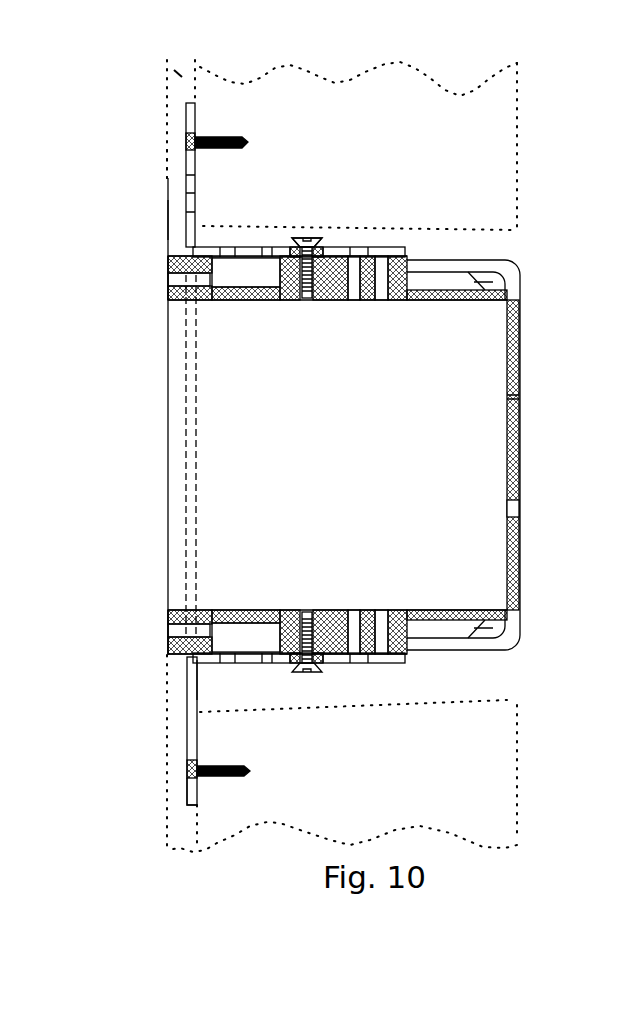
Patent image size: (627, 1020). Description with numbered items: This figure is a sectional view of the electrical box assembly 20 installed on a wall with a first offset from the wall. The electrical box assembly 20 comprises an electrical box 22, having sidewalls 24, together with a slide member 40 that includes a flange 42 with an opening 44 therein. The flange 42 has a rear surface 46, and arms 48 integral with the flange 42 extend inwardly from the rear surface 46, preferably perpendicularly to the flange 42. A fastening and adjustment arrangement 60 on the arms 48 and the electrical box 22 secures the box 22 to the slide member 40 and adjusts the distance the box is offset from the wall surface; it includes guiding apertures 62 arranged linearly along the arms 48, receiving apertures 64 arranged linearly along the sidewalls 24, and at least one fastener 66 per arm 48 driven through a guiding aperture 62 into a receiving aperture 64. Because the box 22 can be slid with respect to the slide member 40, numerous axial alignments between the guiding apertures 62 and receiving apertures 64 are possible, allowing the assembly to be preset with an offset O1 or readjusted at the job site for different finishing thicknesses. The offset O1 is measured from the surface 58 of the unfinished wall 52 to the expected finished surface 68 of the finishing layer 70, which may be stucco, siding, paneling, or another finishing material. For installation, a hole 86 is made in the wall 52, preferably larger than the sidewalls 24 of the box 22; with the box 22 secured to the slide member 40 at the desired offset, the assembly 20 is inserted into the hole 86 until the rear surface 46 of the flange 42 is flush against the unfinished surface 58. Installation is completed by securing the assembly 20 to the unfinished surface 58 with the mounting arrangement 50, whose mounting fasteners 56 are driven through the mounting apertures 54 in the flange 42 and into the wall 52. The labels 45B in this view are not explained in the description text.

The electrical box assembly 20 is at (551, 703).
The electrical box 22 is at (495, 258).
The sidewalls 24 is at (437, 607).
The slide member 40 is at (197, 120).
The flange 42 is at (187, 683).
The opening 44 is at (180, 441).
The fastener slot 45B is at (193, 610).
The rear surface 46 is at (210, 693).
The arms 48 is at (390, 258).
The mounting arrangement 50 is at (172, 771).
The unfinished wall 52 is at (444, 121).
The mounting apertures 54 is at (197, 780).
The mounting fasteners 56 is at (228, 762).
The surface of the unfinished wall 58 is at (183, 92).
The fastening and adjustment arrangement 60 is at (297, 213).
The guiding apertures 62 is at (338, 250).
The receiving apertures 64 is at (307, 300).
The fastener 66 is at (303, 678).
The expected finished surface 68 is at (155, 130).
The finishing layer 70 is at (172, 181).
The hole 86 is at (490, 677).
The offset O1 is at (247, 220).